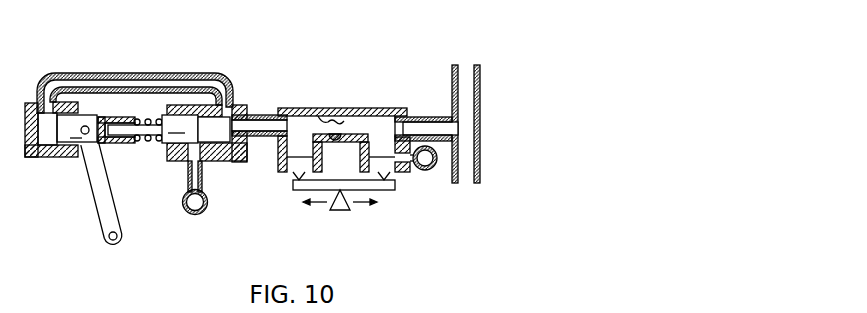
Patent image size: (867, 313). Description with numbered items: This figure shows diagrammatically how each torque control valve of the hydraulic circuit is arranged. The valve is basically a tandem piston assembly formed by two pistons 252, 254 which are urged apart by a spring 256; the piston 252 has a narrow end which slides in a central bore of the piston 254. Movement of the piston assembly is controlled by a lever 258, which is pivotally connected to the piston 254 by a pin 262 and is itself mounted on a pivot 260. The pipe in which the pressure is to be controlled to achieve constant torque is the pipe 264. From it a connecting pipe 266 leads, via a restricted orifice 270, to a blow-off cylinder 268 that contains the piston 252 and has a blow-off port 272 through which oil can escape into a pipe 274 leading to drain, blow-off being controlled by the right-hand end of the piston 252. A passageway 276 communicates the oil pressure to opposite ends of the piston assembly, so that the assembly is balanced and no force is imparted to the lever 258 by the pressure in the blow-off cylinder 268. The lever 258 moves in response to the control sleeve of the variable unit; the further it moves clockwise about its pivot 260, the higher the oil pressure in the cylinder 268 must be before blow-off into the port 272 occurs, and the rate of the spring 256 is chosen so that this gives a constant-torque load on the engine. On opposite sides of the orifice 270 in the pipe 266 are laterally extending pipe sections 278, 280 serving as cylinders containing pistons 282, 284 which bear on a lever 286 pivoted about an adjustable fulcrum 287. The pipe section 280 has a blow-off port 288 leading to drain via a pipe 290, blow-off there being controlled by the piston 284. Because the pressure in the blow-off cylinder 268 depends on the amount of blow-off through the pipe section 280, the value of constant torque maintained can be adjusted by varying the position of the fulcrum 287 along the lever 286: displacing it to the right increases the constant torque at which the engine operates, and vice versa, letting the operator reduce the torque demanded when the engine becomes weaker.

The piston 252 is at (172, 162).
The piston 254 is at (47, 155).
The spring 256 is at (148, 120).
The lever 258 is at (97, 180).
The pivot 260 is at (108, 236).
The pin 262 is at (85, 126).
The pipe 264 is at (467, 87).
The connecting pipe 266 is at (420, 122).
The blow-off cylinder 268 is at (217, 128).
The restricted orifice 270 is at (313, 110).
The blow-off port 272 is at (202, 175).
The pipe 274 is at (207, 212).
The passageway 276 is at (125, 72).
The pipe section 278 is at (292, 138).
The pipe section 280 is at (385, 132).
The piston 282 is at (297, 172).
The piston 284 is at (392, 172).
The lever 286 is at (378, 192).
The adjustable fulcrum 287 is at (338, 196).
The blow-off port 288 is at (413, 170).
The pipe 290 is at (437, 158).